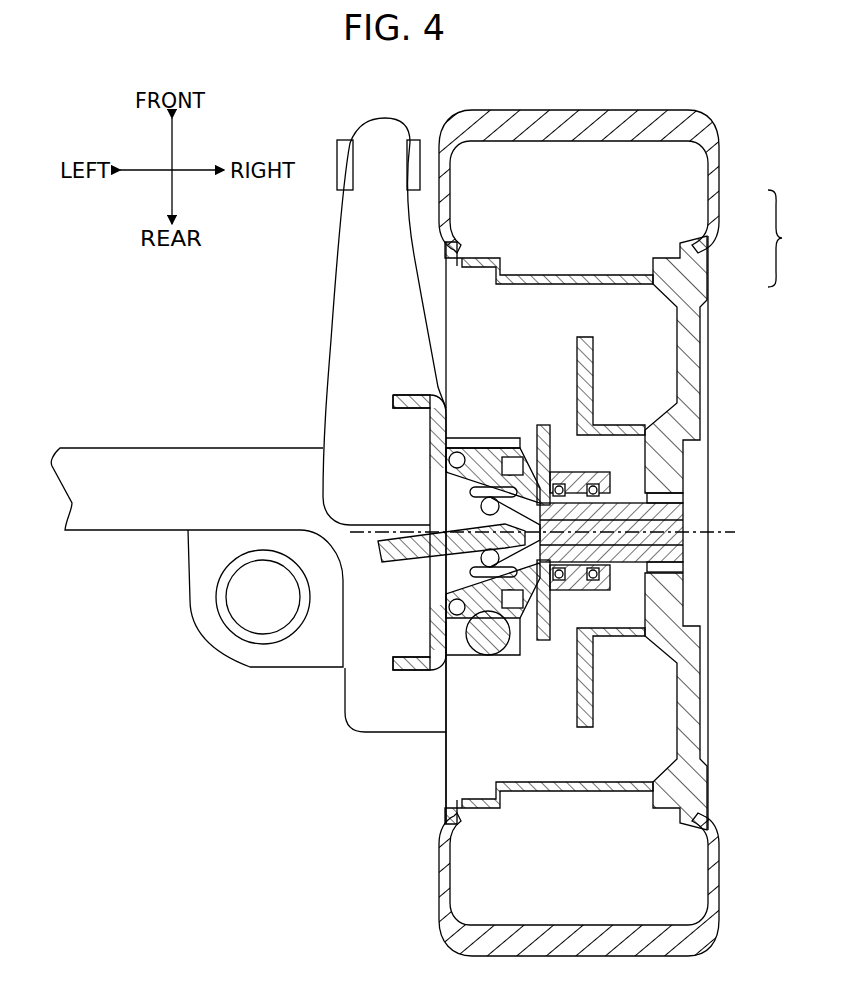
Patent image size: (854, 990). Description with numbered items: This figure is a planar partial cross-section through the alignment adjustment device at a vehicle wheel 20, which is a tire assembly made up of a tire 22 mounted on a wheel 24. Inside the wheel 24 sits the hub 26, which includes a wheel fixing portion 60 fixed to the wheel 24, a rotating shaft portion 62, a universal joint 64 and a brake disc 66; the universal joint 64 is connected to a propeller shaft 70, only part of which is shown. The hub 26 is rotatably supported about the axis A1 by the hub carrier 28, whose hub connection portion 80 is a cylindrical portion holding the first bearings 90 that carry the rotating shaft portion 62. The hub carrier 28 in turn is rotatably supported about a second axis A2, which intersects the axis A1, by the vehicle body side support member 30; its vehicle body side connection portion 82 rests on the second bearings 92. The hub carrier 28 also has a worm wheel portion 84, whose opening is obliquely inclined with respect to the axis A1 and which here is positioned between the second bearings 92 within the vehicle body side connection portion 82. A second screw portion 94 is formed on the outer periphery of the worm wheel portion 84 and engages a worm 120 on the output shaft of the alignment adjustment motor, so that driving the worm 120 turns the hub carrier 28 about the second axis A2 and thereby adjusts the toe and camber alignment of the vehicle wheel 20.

The vehicle wheel 20 is at (625, 533).
The tire 22 is at (718, 212).
The wheel 24 is at (703, 279).
The hub 26 is at (690, 596).
The hub carrier 28 is at (600, 628).
The vehicle body side support member 30 is at (402, 437).
The wheel fixing portion 60 is at (652, 539).
The rotating shaft portion 62 is at (650, 510).
The universal joint 64 is at (472, 494).
The brake disc 66 is at (585, 728).
The propeller shaft 70 is at (424, 556).
The hub connection portion 80 is at (566, 474).
The vehicle body side connection portion 82 is at (514, 625).
The worm wheel portion 84 is at (493, 485).
The first bearings 90 is at (548, 592).
The second bearings 92 is at (509, 455).
The second screw portion 94 is at (478, 450).
The worm 120 is at (490, 656).
The axis A1 is at (579, 532).
The second axis A2 is at (579, 532).